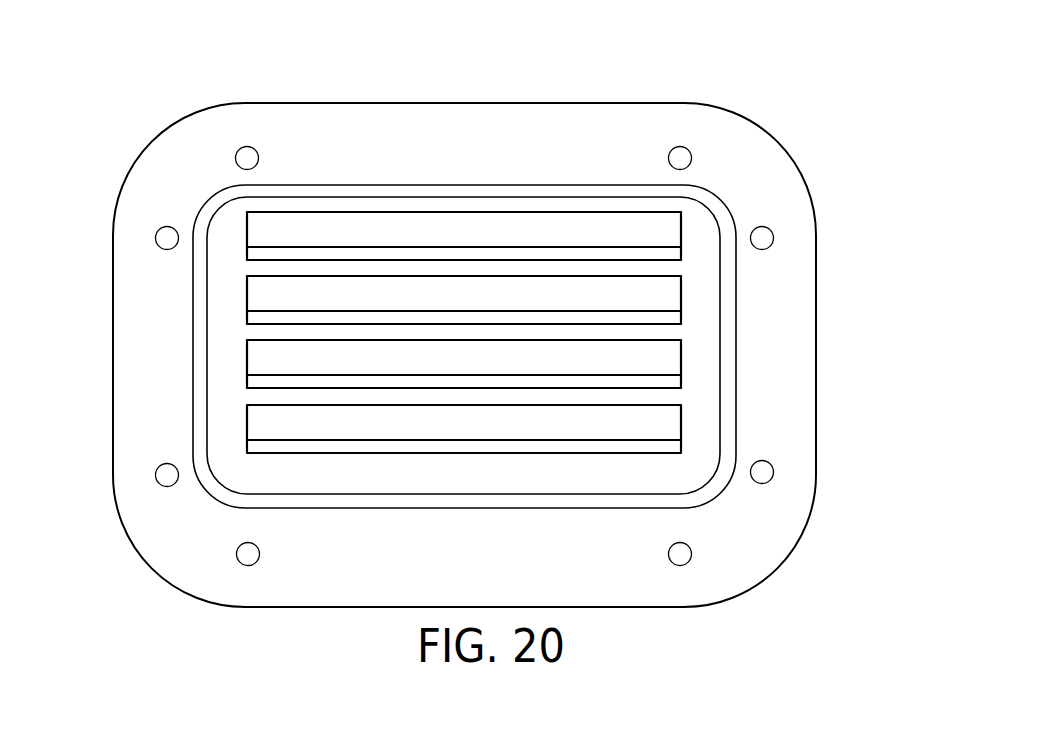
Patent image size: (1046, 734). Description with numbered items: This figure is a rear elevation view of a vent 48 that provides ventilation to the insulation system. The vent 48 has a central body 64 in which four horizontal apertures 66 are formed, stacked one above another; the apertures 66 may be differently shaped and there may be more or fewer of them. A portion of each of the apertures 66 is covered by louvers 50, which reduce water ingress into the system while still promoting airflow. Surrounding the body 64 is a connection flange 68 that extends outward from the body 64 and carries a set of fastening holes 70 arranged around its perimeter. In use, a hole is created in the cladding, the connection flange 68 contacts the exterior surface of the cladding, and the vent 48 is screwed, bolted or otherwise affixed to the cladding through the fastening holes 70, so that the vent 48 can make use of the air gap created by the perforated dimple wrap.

The vent 48 is at (160, 88).
The connection flange 68 is at (537, 125).
The body 64 is at (662, 478).
The louvers 50 is at (256, 234).
The horizontal apertures 66 is at (658, 447).
The fastening holes 70 is at (162, 480).